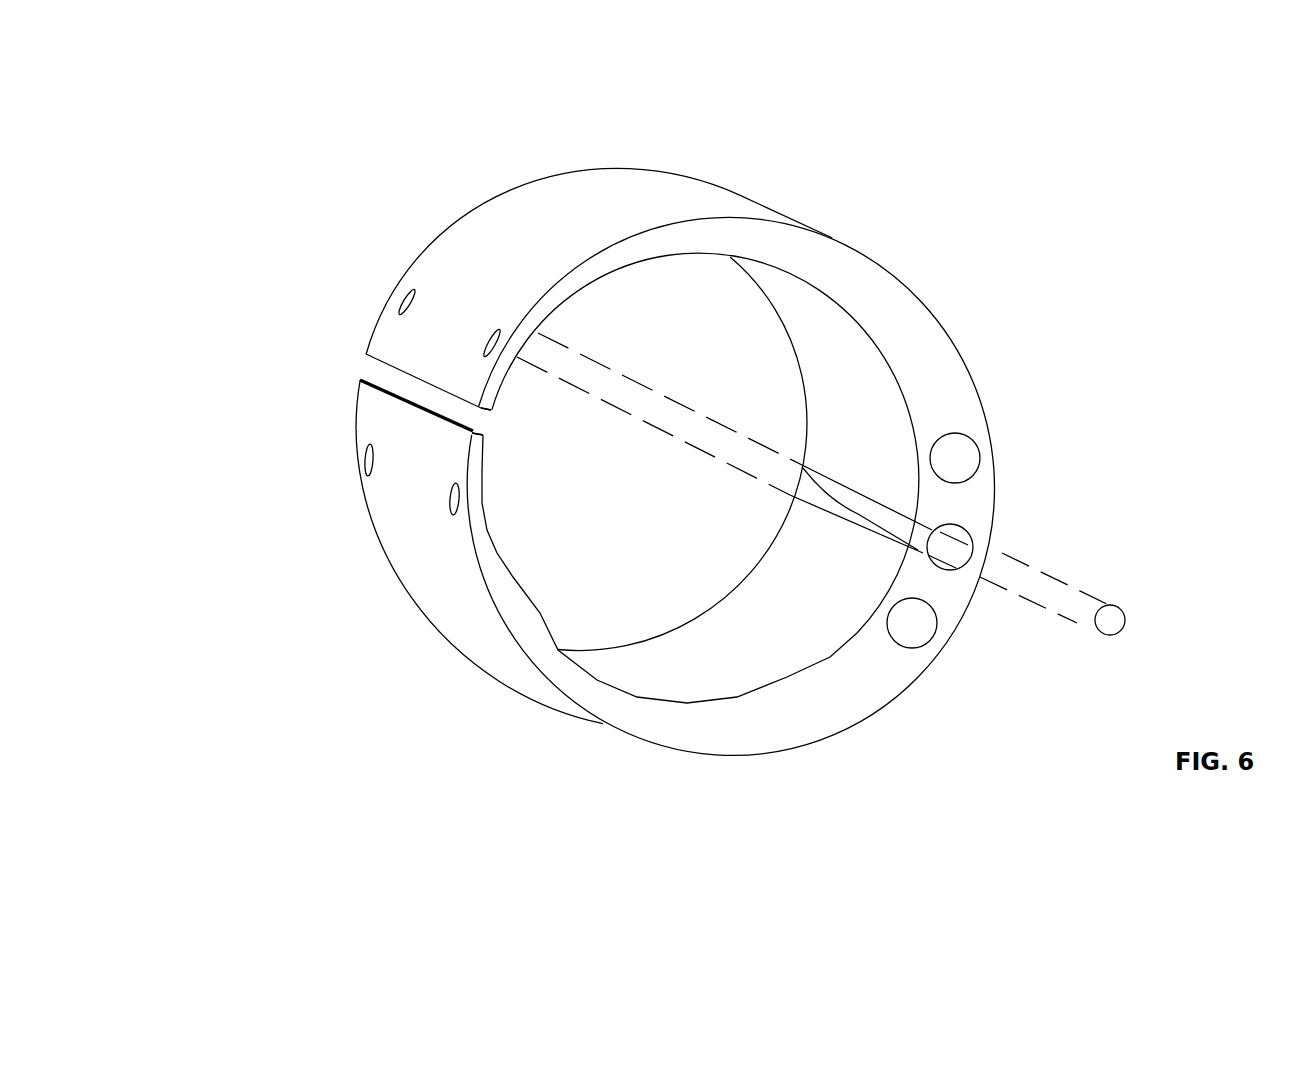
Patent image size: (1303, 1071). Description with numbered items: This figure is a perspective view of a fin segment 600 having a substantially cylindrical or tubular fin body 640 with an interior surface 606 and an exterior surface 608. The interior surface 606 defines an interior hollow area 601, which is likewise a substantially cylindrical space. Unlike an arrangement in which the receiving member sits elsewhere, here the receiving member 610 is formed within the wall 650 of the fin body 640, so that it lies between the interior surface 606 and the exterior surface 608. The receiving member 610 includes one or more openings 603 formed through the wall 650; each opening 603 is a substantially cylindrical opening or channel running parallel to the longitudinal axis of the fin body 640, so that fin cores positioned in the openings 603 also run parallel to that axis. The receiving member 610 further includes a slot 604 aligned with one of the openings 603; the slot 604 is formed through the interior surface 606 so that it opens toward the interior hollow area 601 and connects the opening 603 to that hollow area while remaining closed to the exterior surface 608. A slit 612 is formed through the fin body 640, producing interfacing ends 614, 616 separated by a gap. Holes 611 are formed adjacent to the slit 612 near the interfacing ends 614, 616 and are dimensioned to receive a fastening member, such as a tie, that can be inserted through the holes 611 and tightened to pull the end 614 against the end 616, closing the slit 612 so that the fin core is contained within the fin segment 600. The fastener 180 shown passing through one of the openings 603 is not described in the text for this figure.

The fin segment 600 is at (1053, 158).
The interior hollow area 601 is at (688, 312).
The openings 603 is at (912, 622).
The slot 604 is at (832, 500).
The interior surface 606 is at (853, 398).
The exterior surface 608 is at (787, 211).
The receiving member 610 is at (945, 670).
The holes 611 is at (487, 327).
The slit 612 is at (420, 386).
The interfacing end 614 is at (362, 368).
The interfacing end 616 is at (440, 393).
The fin body 640 is at (557, 215).
The wall 650 is at (868, 670).
The fastener 180 is at (1072, 627).